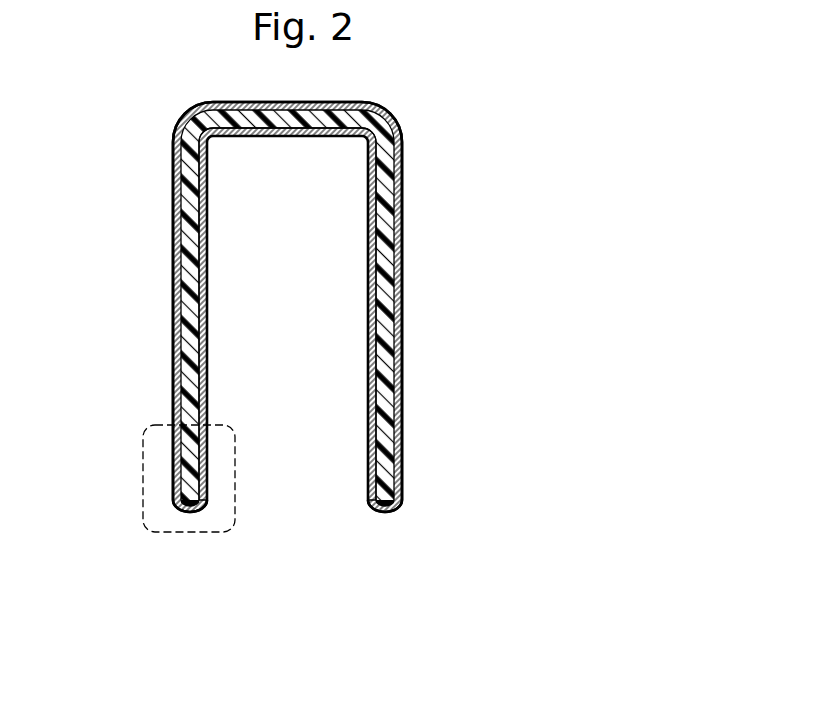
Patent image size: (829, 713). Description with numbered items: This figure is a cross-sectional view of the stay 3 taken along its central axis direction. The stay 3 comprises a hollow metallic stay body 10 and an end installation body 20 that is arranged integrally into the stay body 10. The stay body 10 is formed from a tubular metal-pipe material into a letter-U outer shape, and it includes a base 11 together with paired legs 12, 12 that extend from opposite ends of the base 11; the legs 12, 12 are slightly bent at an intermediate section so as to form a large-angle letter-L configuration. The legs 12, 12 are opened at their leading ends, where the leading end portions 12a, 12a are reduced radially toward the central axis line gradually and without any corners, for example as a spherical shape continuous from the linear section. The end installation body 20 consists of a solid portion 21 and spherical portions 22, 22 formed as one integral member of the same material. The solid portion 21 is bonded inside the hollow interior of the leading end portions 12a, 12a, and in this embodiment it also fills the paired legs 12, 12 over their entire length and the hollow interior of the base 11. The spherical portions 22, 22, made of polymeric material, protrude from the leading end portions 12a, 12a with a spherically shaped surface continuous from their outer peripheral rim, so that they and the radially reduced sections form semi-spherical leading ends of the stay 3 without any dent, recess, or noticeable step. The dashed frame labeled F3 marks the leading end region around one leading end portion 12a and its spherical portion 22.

The stay 3 is at (317, 322).
The stay body 10 is at (402, 298).
The base 11 is at (288, 103).
The legs 12 is at (173, 262).
The leading end portions 12a is at (186, 511).
The end installation body 20 is at (386, 396).
The solid portion 21 is at (386, 367).
The spherical portions 22 is at (190, 513).
The detail region of Fig. 3 F3 is at (160, 424).